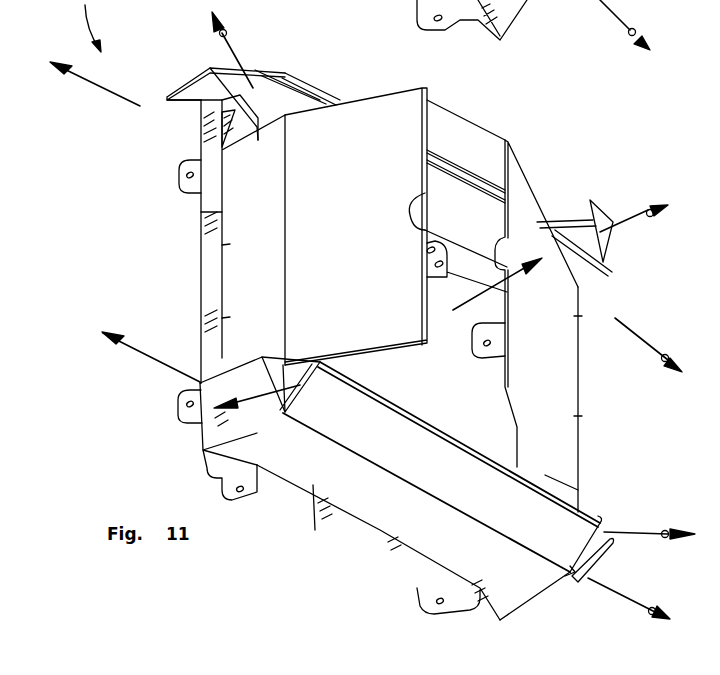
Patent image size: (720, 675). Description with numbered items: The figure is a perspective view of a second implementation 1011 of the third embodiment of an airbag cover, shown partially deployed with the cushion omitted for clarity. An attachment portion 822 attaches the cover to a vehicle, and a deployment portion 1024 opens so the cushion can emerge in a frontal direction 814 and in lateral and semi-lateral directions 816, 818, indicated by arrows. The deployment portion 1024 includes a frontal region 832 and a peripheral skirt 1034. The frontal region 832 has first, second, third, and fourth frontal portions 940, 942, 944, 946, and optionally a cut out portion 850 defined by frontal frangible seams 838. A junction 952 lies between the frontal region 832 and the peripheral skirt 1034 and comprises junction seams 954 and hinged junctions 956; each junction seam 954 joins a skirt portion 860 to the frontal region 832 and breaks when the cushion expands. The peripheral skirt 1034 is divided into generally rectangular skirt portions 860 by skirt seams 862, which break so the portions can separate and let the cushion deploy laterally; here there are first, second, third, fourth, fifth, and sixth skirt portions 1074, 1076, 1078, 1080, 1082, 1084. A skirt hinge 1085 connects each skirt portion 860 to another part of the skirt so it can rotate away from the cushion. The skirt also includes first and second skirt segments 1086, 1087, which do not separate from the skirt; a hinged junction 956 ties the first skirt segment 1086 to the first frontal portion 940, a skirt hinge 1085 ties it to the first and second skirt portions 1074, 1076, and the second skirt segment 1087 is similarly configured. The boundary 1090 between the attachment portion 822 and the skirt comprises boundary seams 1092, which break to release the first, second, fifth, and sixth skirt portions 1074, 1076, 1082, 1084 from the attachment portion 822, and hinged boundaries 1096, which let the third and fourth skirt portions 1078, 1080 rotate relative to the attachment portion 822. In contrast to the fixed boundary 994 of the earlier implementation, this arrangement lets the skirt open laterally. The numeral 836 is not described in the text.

The second implementation 1011 is at (94, 26).
The lateral direction 816 is at (88, 80).
The semi-lateral direction 818 is at (238, 46).
The frontal direction 814 is at (515, 272).
The attachment portion 822 is at (207, 68).
The frontal region 832 is at (582, 370).
The end panel edge 836 is at (578, 316).
The frontal frangible seams 838 is at (345, 95).
The cut out portion 850 is at (540, 222).
The skirt portions 860 is at (203, 445).
The skirt seams 862 is at (257, 128).
The first frontal portion 940 is at (470, 180).
The second frontal portion 942 is at (285, 196).
The third frontal portion 944 is at (578, 416).
The fourth frontal portion 946 is at (405, 478).
The junction 952 is at (357, 455).
The junction seams 954 is at (283, 73).
The hinged junctions 956 is at (451, 162).
The fixed boundary 994 is at (478, 30).
The deployment portion 1024 is at (222, 212).
The peripheral skirt 1034 is at (313, 487).
The first skirt portion 1074 is at (180, 95).
The second skirt portion 1076 is at (600, 185).
The third skirt portion 1078 is at (222, 318).
The fourth skirt portion 1080 is at (560, 480).
The fifth skirt portion 1082 is at (200, 383).
The sixth skirt portion 1084 is at (577, 580).
The skirt hinge 1085 is at (287, 150).
The first skirt segment 1086 is at (458, 270).
The second skirt segment 1087 is at (375, 528).
The boundary 1090 is at (222, 245).
The boundary seams 1092 is at (200, 100).
The hinged boundaries 1096 is at (215, 193).